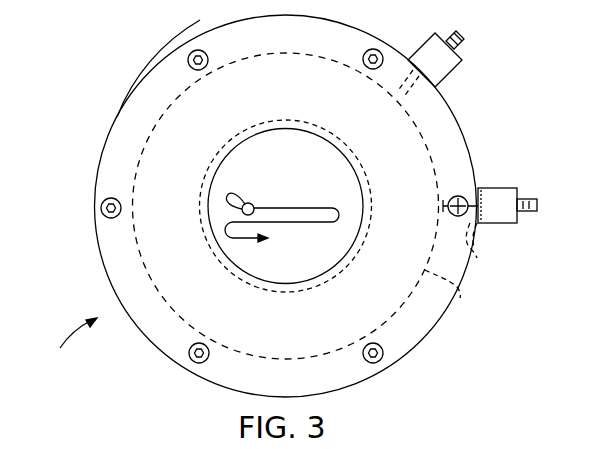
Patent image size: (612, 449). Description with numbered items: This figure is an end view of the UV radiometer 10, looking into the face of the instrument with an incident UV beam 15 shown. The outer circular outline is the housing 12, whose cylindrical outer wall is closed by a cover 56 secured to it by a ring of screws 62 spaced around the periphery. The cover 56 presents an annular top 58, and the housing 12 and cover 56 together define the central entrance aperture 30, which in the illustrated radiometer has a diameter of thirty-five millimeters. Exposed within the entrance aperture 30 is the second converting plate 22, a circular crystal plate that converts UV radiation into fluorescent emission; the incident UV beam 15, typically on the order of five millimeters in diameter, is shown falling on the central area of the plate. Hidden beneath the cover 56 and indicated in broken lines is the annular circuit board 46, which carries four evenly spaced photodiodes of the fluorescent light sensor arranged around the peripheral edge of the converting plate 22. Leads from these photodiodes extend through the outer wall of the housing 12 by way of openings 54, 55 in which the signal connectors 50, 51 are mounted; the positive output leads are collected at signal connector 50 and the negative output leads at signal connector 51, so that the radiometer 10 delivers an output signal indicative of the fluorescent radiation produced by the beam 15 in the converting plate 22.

The UV radiometer 10 is at (78, 346).
The housing 12 is at (101, 153).
The UV beam 15 is at (250, 202).
The second converting plate 22 is at (315, 153).
The entrance aperture 30 is at (323, 247).
The annular circuit board 46 is at (456, 291).
The signal connector 50 is at (497, 192).
The signal connector 51 is at (425, 53).
The opening 54 is at (478, 256).
The opening 55 is at (412, 101).
The cover 56 is at (116, 117).
The annular top 58 is at (209, 122).
The screws 62 is at (190, 53).